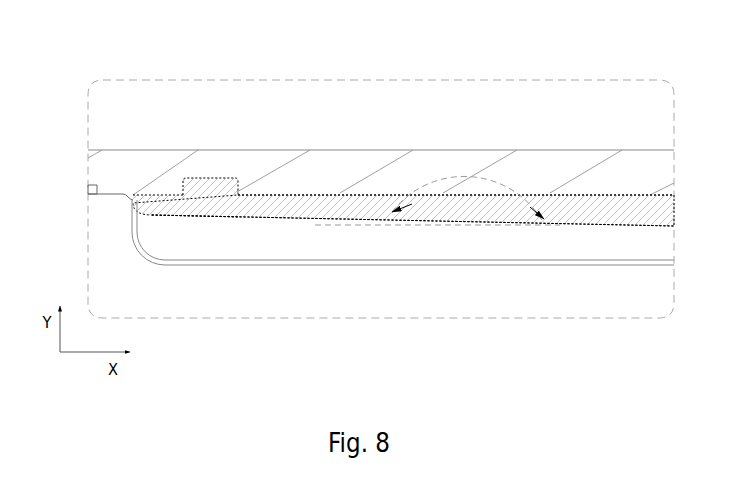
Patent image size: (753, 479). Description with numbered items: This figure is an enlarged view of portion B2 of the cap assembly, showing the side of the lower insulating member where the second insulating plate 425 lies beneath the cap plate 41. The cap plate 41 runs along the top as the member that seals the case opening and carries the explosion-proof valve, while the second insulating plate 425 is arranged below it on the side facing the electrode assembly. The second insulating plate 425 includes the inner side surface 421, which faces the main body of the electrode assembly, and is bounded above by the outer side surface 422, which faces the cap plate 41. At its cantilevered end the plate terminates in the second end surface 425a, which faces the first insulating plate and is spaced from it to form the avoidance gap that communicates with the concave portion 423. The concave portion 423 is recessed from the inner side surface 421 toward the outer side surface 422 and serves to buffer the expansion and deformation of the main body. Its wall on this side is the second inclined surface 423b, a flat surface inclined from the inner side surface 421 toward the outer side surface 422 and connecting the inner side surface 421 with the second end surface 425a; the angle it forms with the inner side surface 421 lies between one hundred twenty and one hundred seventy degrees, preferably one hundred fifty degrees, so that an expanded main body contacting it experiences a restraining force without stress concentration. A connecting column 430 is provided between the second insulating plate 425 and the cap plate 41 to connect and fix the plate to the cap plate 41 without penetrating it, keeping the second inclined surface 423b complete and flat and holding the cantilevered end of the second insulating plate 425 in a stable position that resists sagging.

The cap plate 41 is at (435, 168).
The inner side surface 421 is at (612, 226).
The outer side surface 422 is at (607, 190).
The concave portion 423 is at (103, 212).
The second inclined surface 423b is at (193, 211).
The second insulating plate 425 is at (578, 212).
The second end surface 425a is at (132, 194).
The connecting column 430 is at (208, 188).
The portion B2 is at (398, 28).